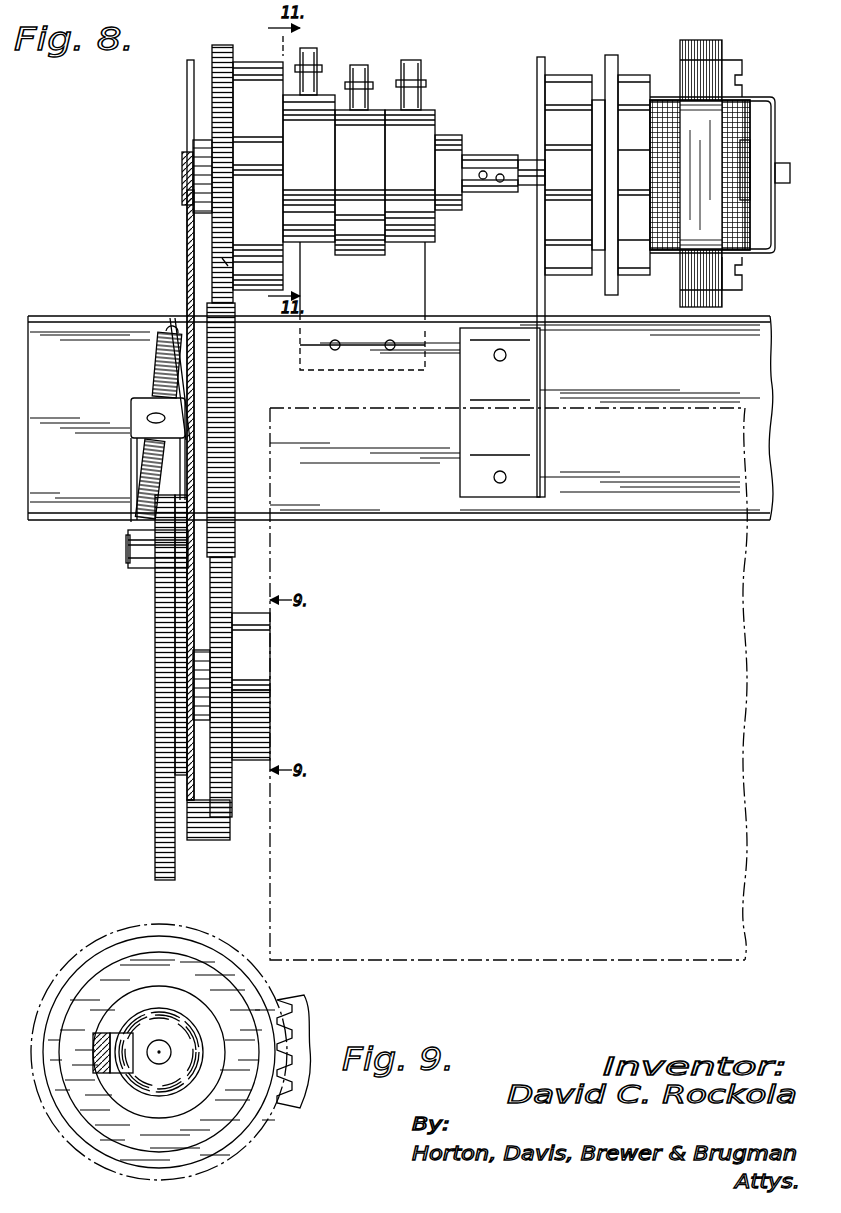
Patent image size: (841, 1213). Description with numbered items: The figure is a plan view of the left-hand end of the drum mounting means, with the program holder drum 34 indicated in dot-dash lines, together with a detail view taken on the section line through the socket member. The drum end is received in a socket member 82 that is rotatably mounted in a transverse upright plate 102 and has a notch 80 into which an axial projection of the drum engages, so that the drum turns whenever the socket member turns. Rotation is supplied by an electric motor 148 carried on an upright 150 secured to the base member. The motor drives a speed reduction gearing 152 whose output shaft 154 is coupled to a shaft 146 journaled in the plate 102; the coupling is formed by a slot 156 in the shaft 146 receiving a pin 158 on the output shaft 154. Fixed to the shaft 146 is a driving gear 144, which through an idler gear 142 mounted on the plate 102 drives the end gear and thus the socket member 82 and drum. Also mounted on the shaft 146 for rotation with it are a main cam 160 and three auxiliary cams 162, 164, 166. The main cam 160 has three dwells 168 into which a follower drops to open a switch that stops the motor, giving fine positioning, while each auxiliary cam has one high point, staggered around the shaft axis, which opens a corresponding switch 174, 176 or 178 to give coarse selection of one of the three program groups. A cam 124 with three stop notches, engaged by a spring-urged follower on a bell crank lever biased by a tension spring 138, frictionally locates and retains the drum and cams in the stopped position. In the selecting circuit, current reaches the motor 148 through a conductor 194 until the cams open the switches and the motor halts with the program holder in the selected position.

The program holder drum 34 is at (630, 962).
The notch 80 is at (272, 748).
The socket member 82 is at (260, 652).
The transverse upright plate 102 is at (187, 89).
The cam 124 is at (160, 706).
The tension spring 138 is at (156, 378).
The idler gear 142 is at (234, 370).
The driving gear 144 is at (214, 258).
The shaft 146 is at (182, 167).
The electric motor 148 is at (660, 46).
The upright 150 is at (540, 370).
The speed reduction gearing 152 is at (582, 60).
The output shaft 154 is at (524, 165).
The slot 156 is at (483, 180).
The pin 158 is at (501, 183).
The main cam 160 is at (214, 277).
The auxiliary cam 162 is at (305, 242).
The auxiliary cam 164 is at (375, 222).
The auxiliary cam 166 is at (425, 222).
The dwells 168 is at (255, 155).
The switch 174 is at (312, 50).
The switch 176 is at (363, 67).
The switch 178 is at (415, 62).
The conductor 194 is at (92, 508).